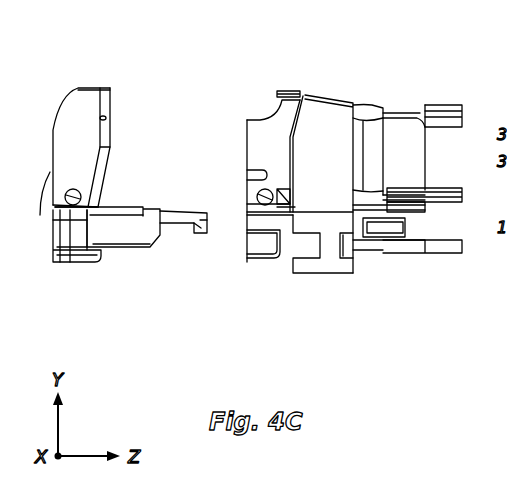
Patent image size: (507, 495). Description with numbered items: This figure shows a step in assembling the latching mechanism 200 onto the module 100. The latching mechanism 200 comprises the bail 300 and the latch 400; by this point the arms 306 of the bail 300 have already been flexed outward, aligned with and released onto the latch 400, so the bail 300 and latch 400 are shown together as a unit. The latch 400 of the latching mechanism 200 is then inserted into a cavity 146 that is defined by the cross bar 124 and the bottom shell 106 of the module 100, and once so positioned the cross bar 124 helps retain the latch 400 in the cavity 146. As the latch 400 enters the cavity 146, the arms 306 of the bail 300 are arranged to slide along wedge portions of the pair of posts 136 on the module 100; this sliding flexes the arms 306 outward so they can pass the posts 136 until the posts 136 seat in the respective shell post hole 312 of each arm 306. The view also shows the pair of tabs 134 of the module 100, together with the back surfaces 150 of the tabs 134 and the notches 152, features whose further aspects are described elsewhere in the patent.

The module 100 is at (441, 88).
The bottom shell 106 is at (441, 225).
The cross bar 124 is at (332, 256).
The tabs 134 is at (246, 250).
The posts 136 is at (278, 186).
The cavity 146 is at (302, 249).
The back surfaces 150 is at (278, 193).
The notches 152 is at (285, 176).
The latching mechanism 200 is at (40, 292).
The bail 300 is at (128, 112).
The arms 306 is at (50, 172).
The shell post hole 312 is at (60, 206).
The latch 400 is at (137, 262).